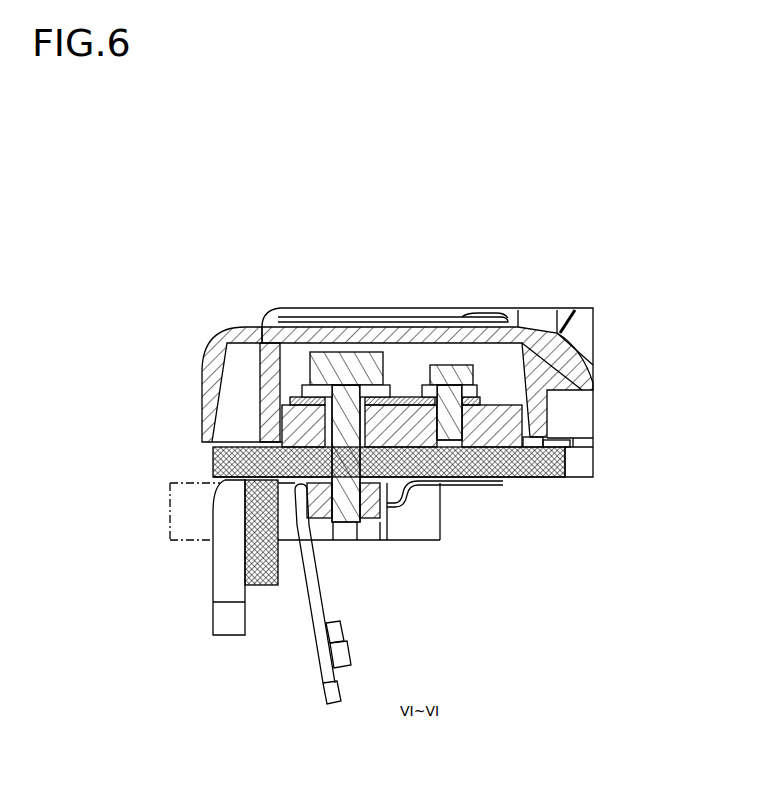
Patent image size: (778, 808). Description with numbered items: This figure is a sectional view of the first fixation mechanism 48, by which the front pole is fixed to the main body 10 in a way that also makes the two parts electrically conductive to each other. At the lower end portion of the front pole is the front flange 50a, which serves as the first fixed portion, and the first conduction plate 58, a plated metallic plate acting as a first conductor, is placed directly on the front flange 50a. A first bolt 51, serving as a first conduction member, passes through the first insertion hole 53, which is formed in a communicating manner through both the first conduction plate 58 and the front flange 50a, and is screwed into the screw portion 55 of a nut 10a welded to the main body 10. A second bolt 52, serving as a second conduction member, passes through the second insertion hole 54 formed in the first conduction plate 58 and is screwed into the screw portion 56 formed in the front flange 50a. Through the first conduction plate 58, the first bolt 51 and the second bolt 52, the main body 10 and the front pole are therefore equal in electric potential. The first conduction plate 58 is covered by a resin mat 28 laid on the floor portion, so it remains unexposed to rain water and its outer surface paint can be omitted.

The first fixation mechanism 48 is at (401, 365).
The resin mat 28 is at (250, 327).
The second insertion hole 54 is at (482, 394).
The second bolt 52 is at (437, 395).
The front flange 50a is at (300, 428).
The first bolt 51 is at (352, 364).
The first conduction plate 58 is at (290, 397).
The first insertion hole 53 is at (397, 388).
The main body 10 is at (220, 460).
The nut 10a is at (317, 522).
The screw portion 55 is at (378, 522).
The screw portion 56 is at (482, 487).